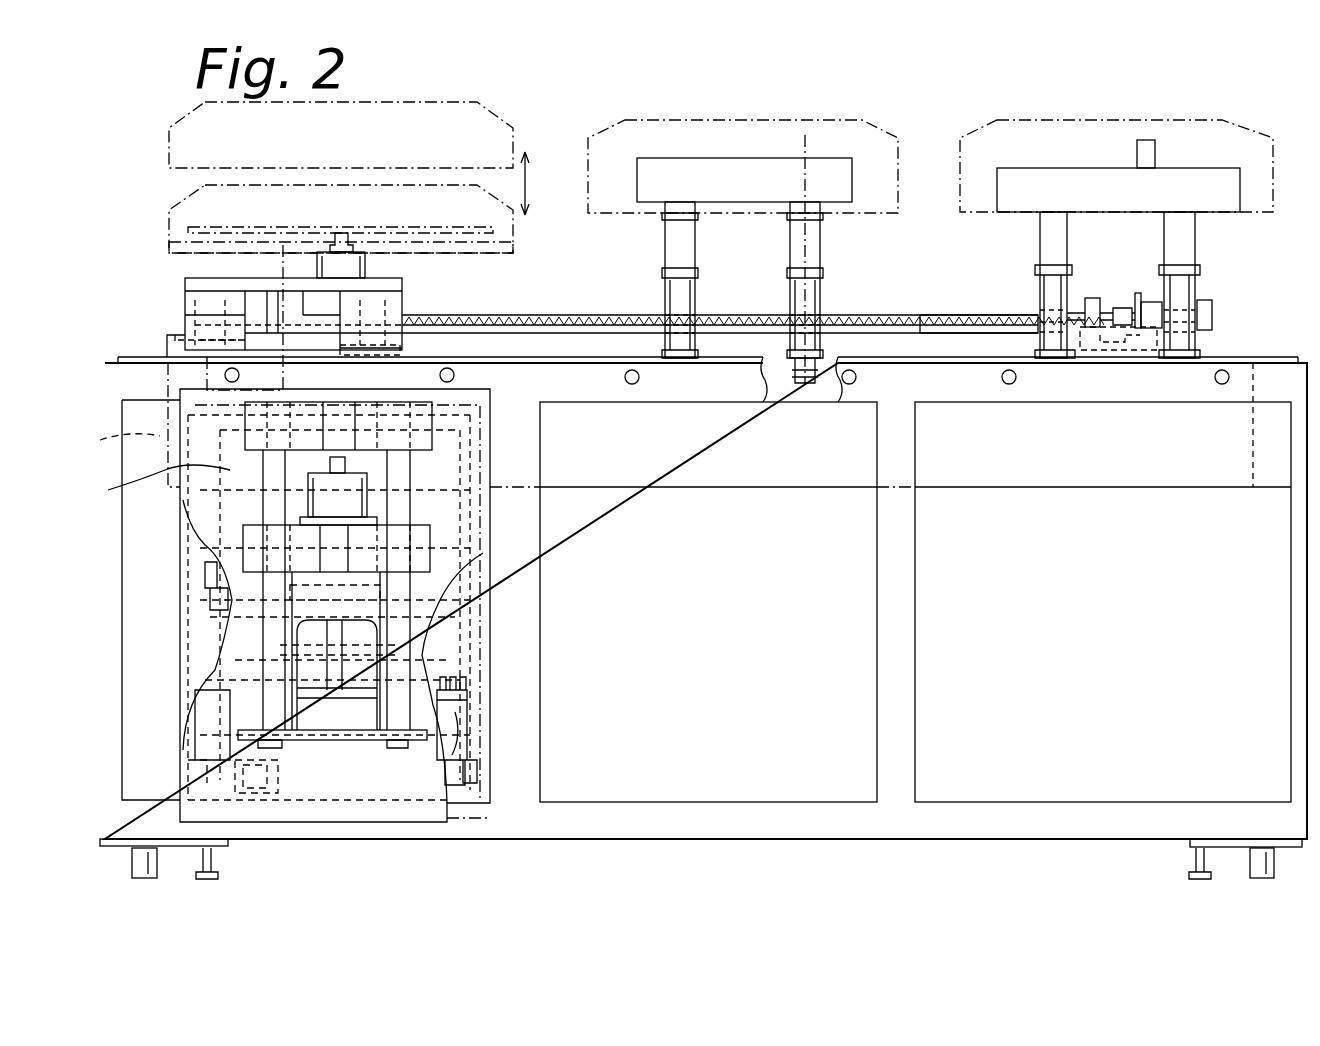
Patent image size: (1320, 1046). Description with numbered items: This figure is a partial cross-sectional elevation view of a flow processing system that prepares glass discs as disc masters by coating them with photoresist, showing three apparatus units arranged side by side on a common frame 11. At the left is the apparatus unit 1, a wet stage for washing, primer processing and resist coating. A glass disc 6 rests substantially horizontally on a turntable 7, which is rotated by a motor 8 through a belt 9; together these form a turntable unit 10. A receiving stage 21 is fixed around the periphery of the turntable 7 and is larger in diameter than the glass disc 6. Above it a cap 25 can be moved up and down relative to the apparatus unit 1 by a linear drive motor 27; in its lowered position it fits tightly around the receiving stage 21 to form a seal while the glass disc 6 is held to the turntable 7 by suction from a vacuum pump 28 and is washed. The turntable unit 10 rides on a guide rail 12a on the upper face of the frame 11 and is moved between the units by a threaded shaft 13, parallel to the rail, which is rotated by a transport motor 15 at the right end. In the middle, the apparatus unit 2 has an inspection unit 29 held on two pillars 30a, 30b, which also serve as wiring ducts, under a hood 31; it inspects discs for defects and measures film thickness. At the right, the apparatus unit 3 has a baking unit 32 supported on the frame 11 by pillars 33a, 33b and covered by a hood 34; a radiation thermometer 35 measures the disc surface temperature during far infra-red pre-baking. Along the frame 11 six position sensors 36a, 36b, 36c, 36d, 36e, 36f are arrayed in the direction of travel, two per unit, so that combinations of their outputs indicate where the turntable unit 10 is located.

The apparatus unit 1 is at (531, 106).
The apparatus unit 2 is at (908, 116).
The apparatus unit 3 is at (1284, 115).
The glass disc 6 is at (215, 224).
The turntable 7 is at (352, 231).
The motor 8 is at (170, 330).
The belt 9 is at (283, 245).
The turntable unit 10 is at (410, 306).
The frame 11 is at (1290, 362).
The guide rail 12a is at (913, 343).
The threaded shaft 13 is at (597, 313).
The transport motor 15 is at (1214, 300).
The receiving stage 21 is at (190, 254).
The cap 25 is at (436, 98).
The linear drive motor 27 is at (296, 510).
The vacuum pump 28 is at (468, 712).
The inspection unit 29 is at (761, 204).
The pillar 30a is at (663, 236).
The pillar 30b is at (822, 240).
The hood 31 is at (730, 124).
The baking unit 32 is at (1126, 205).
The pillar 33a is at (1037, 237).
The pillar 33b is at (1198, 237).
The hood 34 is at (1138, 122).
The radiation thermometer 35 is at (1157, 145).
The position sensor 36a is at (225, 376).
The position sensor 36b is at (454, 375).
The position sensor 36c is at (632, 384).
The position sensor 36d is at (849, 384).
The position sensor 36e is at (1009, 384).
The position sensor 36f is at (1222, 384).